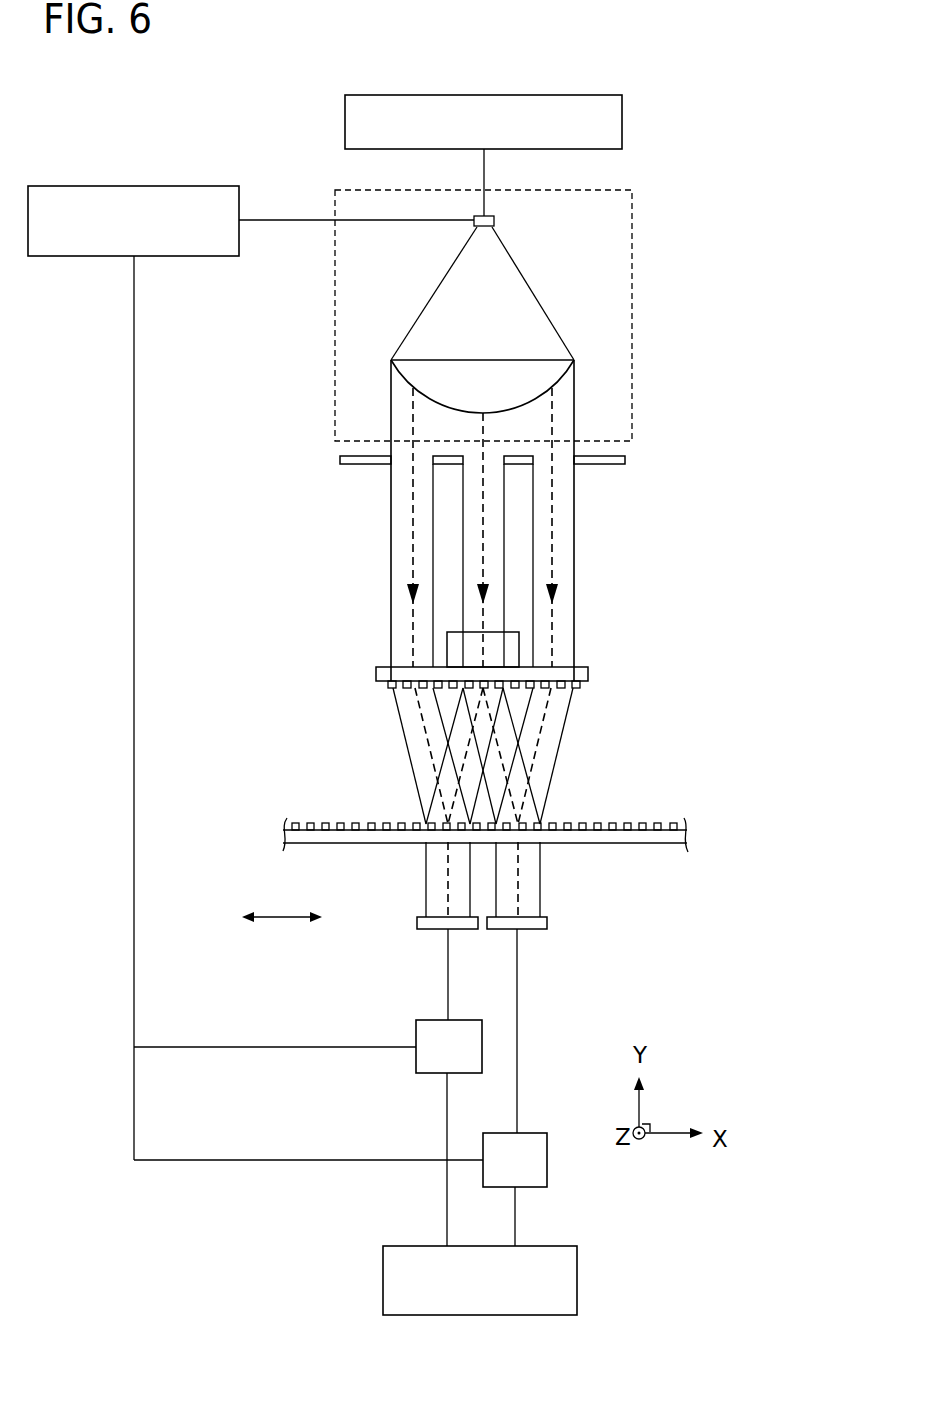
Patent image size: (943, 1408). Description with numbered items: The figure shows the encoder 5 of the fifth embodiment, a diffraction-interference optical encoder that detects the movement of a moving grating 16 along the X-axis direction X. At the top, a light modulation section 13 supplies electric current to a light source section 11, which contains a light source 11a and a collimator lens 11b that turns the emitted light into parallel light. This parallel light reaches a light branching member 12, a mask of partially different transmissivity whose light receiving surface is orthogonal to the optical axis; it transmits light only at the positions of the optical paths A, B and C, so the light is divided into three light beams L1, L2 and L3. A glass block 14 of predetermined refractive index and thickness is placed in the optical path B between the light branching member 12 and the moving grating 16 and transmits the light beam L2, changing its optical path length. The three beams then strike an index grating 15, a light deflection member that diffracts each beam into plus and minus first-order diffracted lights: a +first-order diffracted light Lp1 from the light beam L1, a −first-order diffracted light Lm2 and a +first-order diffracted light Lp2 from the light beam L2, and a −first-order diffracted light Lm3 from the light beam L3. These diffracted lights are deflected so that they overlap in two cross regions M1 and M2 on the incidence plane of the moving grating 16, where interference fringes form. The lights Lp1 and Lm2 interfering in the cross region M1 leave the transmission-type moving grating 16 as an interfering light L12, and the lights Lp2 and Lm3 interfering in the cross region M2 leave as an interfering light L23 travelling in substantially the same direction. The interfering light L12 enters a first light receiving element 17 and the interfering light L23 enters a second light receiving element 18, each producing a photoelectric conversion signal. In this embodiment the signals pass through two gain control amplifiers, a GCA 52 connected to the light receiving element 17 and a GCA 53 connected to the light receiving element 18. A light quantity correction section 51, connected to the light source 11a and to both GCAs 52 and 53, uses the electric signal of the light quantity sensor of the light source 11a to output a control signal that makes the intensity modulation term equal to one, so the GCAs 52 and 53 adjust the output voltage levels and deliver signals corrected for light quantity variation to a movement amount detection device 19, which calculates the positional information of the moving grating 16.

The encoder 5 is at (256, 135).
The light source section 11 is at (632, 197).
The light source 11a is at (494, 220).
The collimator lens 11b is at (530, 364).
The light branching member 12 is at (625, 459).
The light modulation section 13 is at (622, 122).
The glass block 14 is at (436, 644).
The index grating 15 is at (588, 672).
The moving grating 16 is at (662, 833).
The light receiving element 17 is at (467, 931).
The light receiving element 18 is at (535, 931).
The movement amount detection device 19 is at (577, 1278).
The light quantity correction section 51 is at (135, 186).
The GCA 52 is at (420, 1020).
The GCA 53 is at (540, 1133).
The light beam L1 is at (388, 548).
The light beam L2 is at (508, 537).
The light beam L3 is at (578, 565).
The optical path A is at (412, 620).
The optical path B is at (482, 486).
The optical path C is at (553, 620).
The +first-order diffracted light Lp1 is at (388, 708).
The +first-order diffracted light Lp2 is at (523, 709).
The −first-order diffracted light Lm2 is at (452, 712).
The −first-order diffracted light Lm3 is at (562, 751).
The cross region M1 is at (437, 822).
The cross region M2 is at (533, 822).
The interfering light L12 is at (428, 890).
The interfering light L23 is at (545, 890).
The X-axis direction X is at (285, 920).